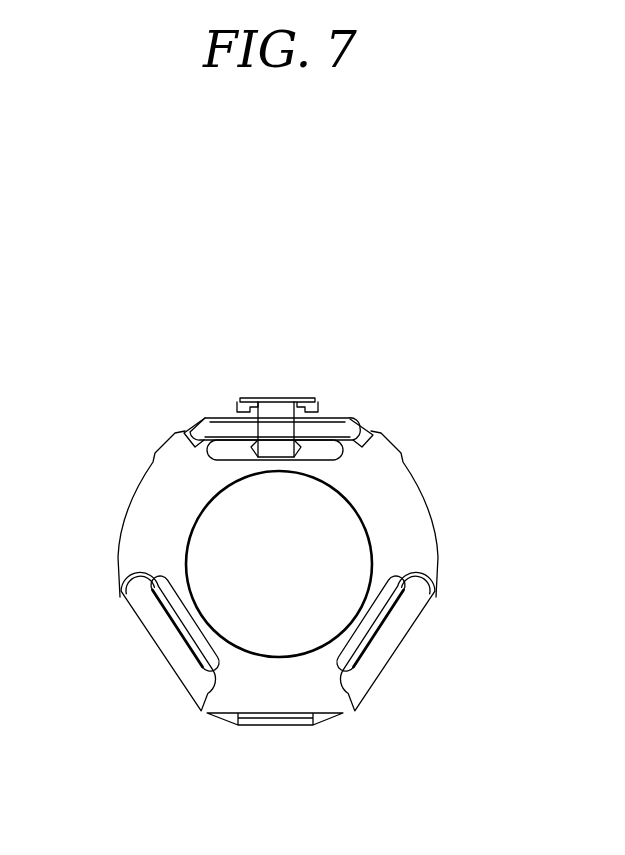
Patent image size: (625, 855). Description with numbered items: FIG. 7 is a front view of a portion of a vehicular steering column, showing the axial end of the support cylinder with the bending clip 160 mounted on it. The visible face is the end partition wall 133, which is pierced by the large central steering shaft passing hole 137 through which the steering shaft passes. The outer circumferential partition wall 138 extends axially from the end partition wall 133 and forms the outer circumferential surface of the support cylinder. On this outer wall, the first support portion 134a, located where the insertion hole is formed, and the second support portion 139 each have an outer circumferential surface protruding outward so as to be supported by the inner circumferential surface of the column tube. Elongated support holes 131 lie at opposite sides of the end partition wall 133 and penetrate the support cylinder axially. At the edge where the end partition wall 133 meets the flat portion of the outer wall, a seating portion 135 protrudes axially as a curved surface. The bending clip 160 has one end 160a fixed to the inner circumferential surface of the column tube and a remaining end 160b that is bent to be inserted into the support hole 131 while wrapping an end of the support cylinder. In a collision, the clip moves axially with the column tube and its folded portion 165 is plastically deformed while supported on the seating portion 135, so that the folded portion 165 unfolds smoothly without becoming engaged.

The support hole 131 is at (172, 637).
The end partition wall 133 is at (143, 528).
The first support portion 134a is at (258, 723).
The seating portion 135 is at (158, 623).
The steering shaft passing hole 137 is at (190, 528).
The outer circumferential partition wall 138 is at (430, 517).
The second support portion 139 is at (165, 445).
The bending clip 160 is at (263, 378).
The one end of the bending clip 160a is at (247, 398).
The remaining end of the bending clip 160b is at (323, 446).
The folded portion 165 is at (287, 428).